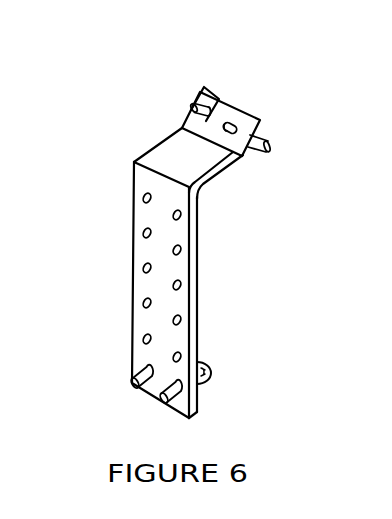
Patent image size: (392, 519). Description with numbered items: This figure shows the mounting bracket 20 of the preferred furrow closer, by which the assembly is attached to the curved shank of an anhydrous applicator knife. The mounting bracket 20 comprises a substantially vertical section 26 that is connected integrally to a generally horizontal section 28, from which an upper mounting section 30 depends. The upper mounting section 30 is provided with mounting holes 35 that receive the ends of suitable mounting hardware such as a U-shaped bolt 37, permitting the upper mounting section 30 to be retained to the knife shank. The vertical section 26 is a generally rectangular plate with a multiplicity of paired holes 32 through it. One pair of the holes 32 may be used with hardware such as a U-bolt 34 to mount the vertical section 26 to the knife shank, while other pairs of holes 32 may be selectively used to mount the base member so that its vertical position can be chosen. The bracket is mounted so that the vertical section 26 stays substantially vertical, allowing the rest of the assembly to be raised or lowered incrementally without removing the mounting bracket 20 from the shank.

The mounting bracket 20 is at (202, 297).
The vertical section 26 is at (141, 287).
The horizontal section 28 is at (222, 177).
The upper mounting section 30 is at (226, 108).
The paired holes 32 is at (181, 249).
The U-bolt 34 is at (212, 371).
The mounting holes 35 is at (212, 97).
The U-shaped bolt 37 is at (271, 143).